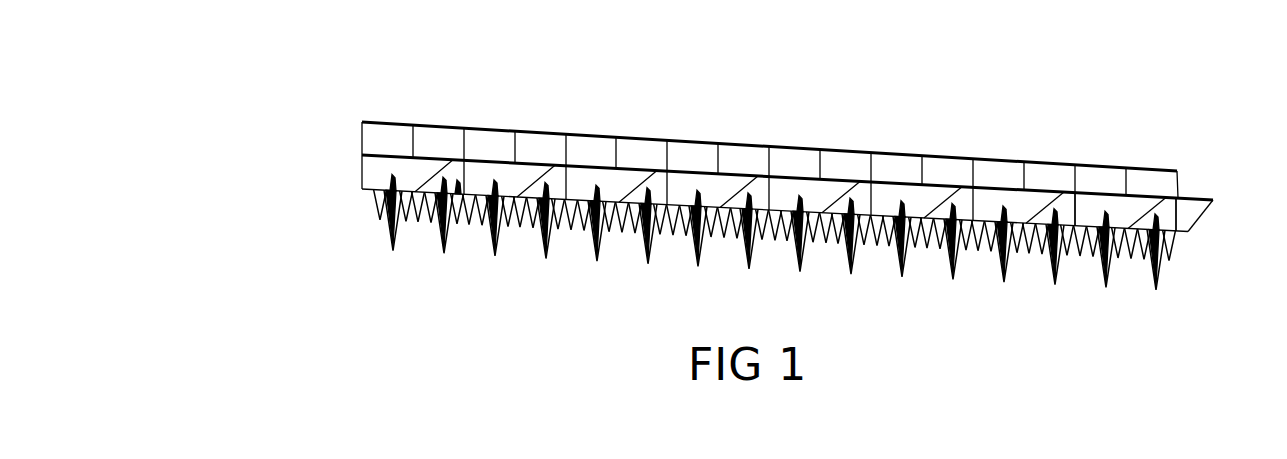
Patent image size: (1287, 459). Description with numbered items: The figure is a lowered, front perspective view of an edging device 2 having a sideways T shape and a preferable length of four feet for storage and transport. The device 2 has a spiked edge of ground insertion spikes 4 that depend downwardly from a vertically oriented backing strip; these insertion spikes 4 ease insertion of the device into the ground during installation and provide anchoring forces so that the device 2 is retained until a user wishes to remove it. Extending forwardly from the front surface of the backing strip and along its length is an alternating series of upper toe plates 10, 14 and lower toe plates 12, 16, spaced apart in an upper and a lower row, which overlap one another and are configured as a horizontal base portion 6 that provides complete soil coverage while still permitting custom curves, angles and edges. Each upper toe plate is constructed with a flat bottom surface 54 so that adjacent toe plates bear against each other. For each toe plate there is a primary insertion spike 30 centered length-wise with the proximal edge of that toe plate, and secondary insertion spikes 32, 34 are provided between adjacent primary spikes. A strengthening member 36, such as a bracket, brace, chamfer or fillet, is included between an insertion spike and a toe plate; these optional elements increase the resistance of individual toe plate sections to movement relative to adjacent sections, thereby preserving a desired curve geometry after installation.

The edging device 2 is at (868, 90).
The ground insertion spikes 4 is at (549, 274).
The horizontal base portion 6 is at (1208, 217).
The upper toe plate 10 is at (964, 206).
The lower toe plate 12 is at (1012, 206).
The upper toe plate 14 is at (1063, 208).
The lower toe plate 16 is at (1113, 211).
The primary insertion spike 30 is at (902, 270).
The secondary insertion spike 32 is at (885, 250).
The secondary insertion spike 34 is at (915, 253).
The strengthening member 36 is at (752, 222).
The flat bottom surface 54 is at (461, 184).